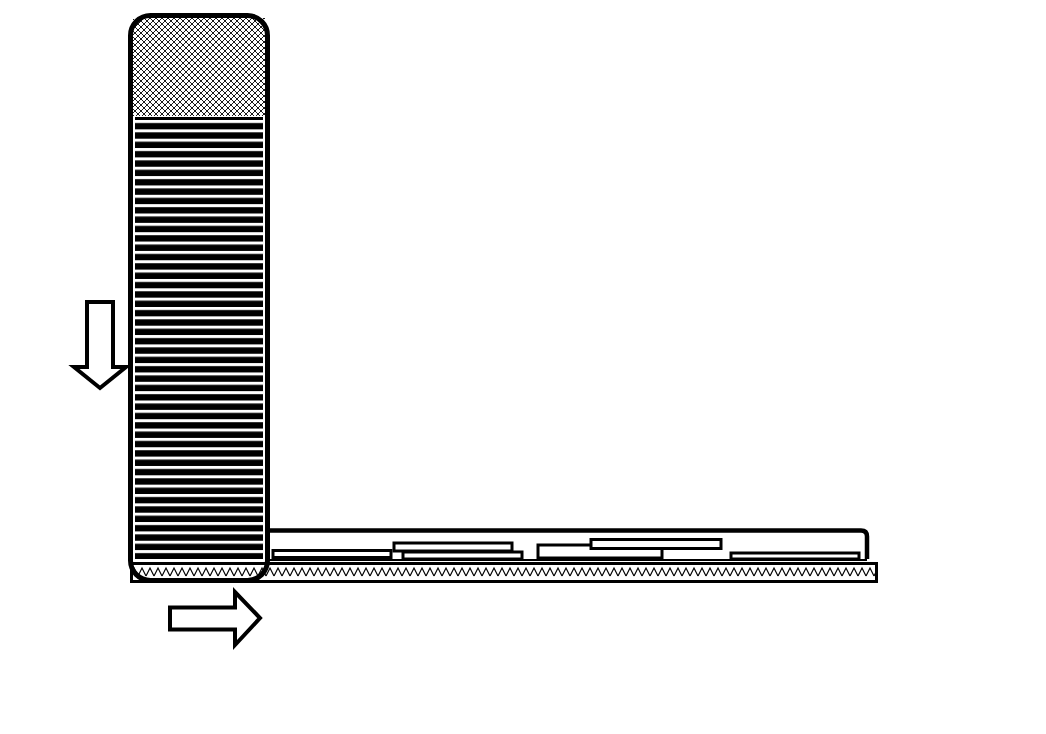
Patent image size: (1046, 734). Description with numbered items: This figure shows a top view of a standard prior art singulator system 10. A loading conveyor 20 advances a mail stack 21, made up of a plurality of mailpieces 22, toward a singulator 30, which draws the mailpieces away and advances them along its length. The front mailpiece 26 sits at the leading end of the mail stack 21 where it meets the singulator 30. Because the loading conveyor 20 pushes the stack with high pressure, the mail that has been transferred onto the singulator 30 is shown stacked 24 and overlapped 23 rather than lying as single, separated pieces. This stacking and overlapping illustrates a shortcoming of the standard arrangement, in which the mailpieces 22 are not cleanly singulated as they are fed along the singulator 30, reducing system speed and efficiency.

The mail singulator system 10 is at (466, 256).
The loading conveyor 20 is at (250, 88).
The mail stack 21 is at (245, 292).
The mailpieces 22 is at (245, 182).
The overlapped mailpieces 23 is at (611, 540).
The stacked mailpieces 24 is at (460, 555).
The front mailpiece 26 is at (153, 567).
The singulator 30 is at (417, 583).